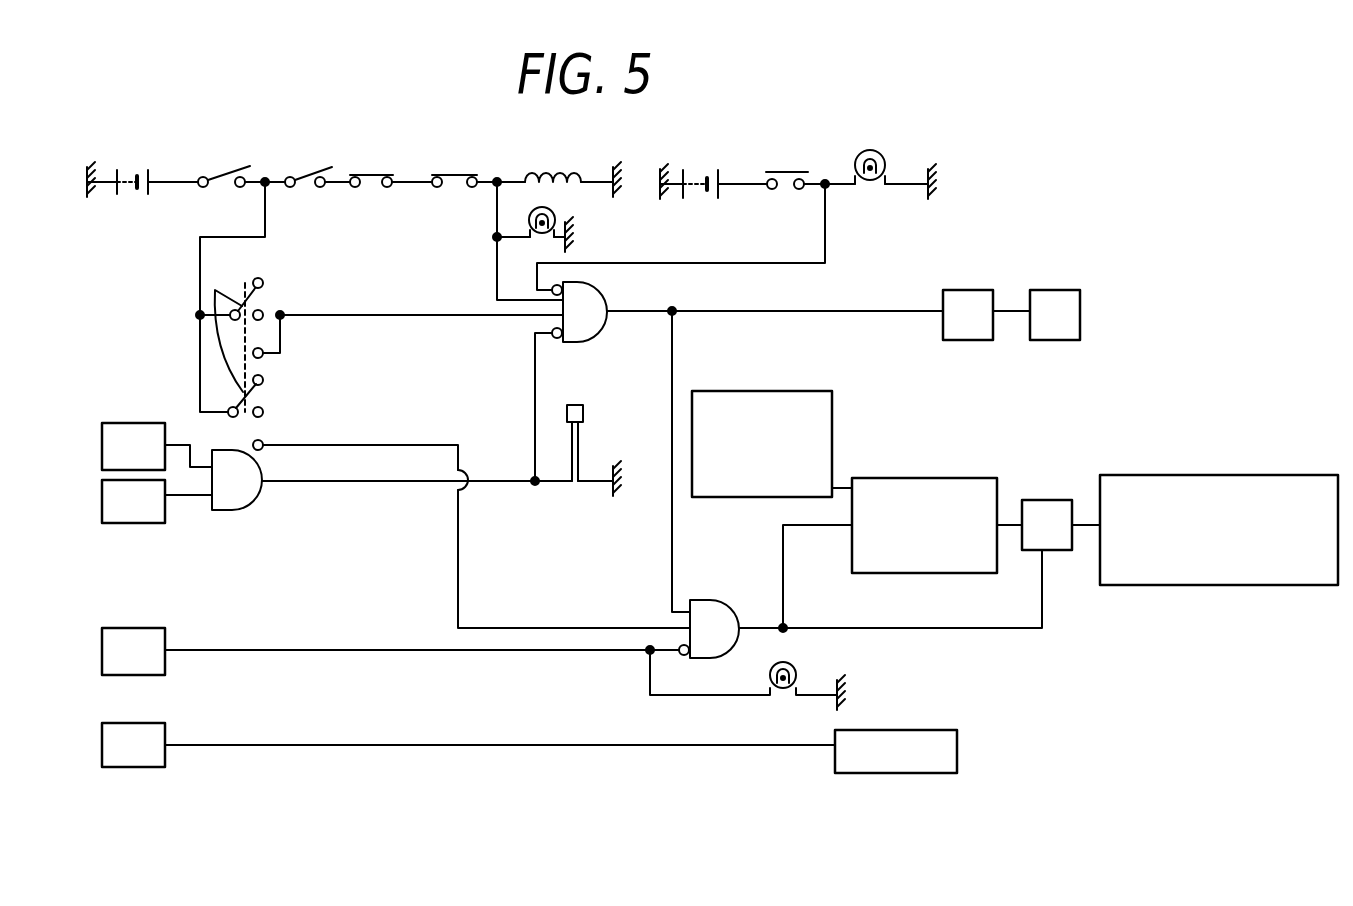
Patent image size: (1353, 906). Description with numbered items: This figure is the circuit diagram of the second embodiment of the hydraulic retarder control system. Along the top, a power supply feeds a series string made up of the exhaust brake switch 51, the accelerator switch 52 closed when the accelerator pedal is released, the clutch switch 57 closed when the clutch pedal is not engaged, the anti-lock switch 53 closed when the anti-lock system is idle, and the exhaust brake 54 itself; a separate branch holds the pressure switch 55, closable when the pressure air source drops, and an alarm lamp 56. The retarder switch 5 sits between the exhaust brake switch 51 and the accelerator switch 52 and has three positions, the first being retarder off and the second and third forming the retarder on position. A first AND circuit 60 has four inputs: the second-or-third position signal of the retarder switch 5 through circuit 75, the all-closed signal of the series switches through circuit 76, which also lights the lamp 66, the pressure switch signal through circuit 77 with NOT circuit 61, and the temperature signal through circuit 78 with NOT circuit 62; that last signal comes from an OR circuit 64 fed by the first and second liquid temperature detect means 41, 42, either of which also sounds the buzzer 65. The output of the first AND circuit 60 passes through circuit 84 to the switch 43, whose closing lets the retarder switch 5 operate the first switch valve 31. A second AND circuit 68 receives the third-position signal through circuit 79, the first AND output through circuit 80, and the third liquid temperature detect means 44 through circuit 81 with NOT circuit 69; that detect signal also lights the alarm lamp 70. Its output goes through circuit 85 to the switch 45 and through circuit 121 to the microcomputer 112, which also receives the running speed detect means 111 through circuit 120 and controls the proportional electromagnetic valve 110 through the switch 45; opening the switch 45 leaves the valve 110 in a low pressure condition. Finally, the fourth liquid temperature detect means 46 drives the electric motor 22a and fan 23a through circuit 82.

The retarder switch 5 is at (255, 325).
The exhaust brake switch 51 is at (227, 170).
The accelerator switch 52 is at (309, 172).
The anti-lock switch 53 is at (457, 172).
The exhaust brake 54 is at (543, 172).
The pressure switch 55 is at (786, 170).
The alarm lamp 56 is at (880, 156).
The clutch switch 57 is at (370, 172).
The first AND circuit 60 is at (601, 336).
The NOT circuit 61 is at (575, 279).
The NOT circuit 62 is at (556, 346).
The OR circuit 64 is at (263, 502).
The buzzer 65 is at (584, 417).
The lamp 66 is at (556, 217).
The second AND circuit 68 is at (712, 601).
The NOT circuit 69 is at (680, 657).
The alarm lamp 70 is at (768, 692).
The circuit 75 is at (373, 312).
The circuit 76 is at (494, 272).
The circuit 77 is at (690, 263).
The circuit 78 is at (497, 472).
The circuit 79 is at (461, 541).
The circuit 80 is at (674, 383).
The circuit 81 is at (462, 653).
The circuit 82 is at (608, 748).
The circuit 84 is at (768, 316).
The circuit 85 is at (798, 628).
The first liquid temperature detect means 41 is at (157, 446).
The second liquid temperature detect means 42 is at (157, 501).
The switch 43 is at (986, 315).
The third liquid temperature detect means 44 is at (133, 651).
The switch 45 is at (1061, 525).
The fourth liquid temperature detect means 46 is at (133, 745).
The first switch valve 31 is at (1055, 315).
The proportional electromagnetic valve 110 is at (1280, 475).
The running speed detect means 111 is at (790, 392).
The microcomputer 112 is at (950, 478).
The circuit 120 is at (843, 486).
The circuit 121 is at (793, 528).
The electric motor 22a is at (896, 751).
The fan 23a is at (896, 751).